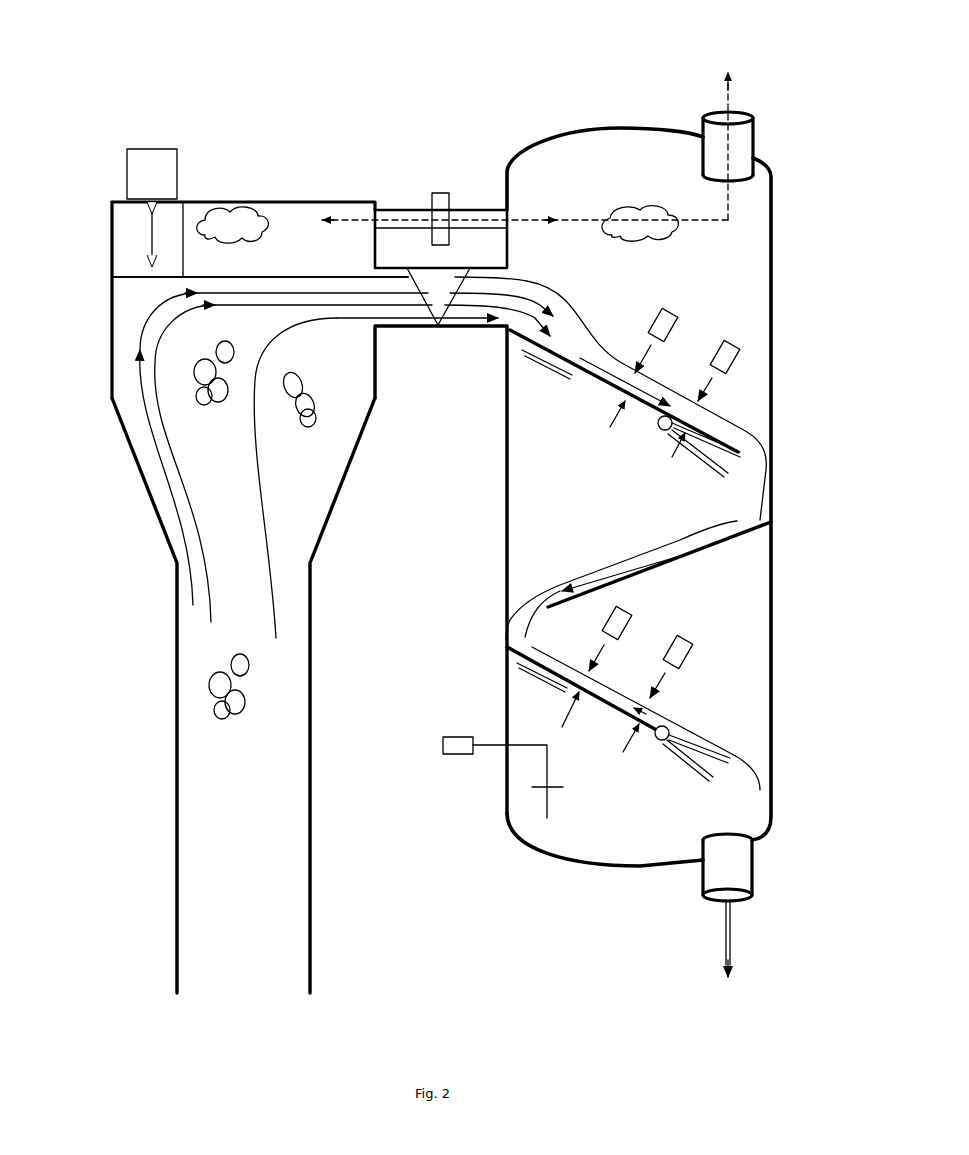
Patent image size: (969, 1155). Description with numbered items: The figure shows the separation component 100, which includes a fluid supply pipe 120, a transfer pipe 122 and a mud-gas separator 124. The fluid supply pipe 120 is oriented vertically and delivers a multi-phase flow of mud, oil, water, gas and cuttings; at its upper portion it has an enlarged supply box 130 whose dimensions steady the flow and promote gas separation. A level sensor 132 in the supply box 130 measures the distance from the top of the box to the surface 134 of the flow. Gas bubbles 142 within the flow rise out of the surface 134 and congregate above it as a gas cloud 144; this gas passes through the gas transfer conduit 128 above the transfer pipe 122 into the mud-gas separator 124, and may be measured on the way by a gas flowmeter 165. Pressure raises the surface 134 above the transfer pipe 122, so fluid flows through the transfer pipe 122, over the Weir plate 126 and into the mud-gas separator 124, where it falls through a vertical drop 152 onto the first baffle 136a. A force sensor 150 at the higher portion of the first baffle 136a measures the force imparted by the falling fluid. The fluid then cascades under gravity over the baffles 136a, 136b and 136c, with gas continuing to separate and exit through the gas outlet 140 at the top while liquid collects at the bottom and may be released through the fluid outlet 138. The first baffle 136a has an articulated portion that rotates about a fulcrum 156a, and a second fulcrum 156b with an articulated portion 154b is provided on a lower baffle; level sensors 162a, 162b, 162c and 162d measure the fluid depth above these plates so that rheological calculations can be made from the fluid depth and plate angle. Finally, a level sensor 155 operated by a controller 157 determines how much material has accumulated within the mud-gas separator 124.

The separation component 100 is at (490, 63).
The fluid supply pipe 120 is at (177, 771).
The transfer pipe 122 is at (462, 335).
The mud-gas separator 124 is at (771, 258).
The Weir plate 126 is at (434, 326).
The gas transfer conduit 128 is at (405, 210).
The supply box 130 is at (92, 203).
The level sensor 132 is at (160, 148).
The surface 134 is at (183, 202).
The first baffle 136a is at (602, 383).
The second baffle 136b is at (714, 545).
The third baffle 136c is at (622, 712).
The fluid outlet 138 is at (752, 868).
The gas outlet 140 is at (753, 150).
The gas bubbles 142 is at (312, 422).
The gas cloud 144 is at (240, 212).
The force sensor 150 is at (565, 380).
The vertical drop 152 is at (488, 335).
The articulated portion 154b is at (704, 470).
The level sensor 155 is at (547, 803).
The fulcrum 156a is at (665, 431).
The second fulcrum 156b is at (655, 748).
The controller 157 is at (458, 736).
The level sensor 162a is at (666, 311).
The level sensor 162b is at (724, 343).
The level sensor 162c is at (620, 609).
The sensor 162d is at (686, 638).
The gas flowmeter 165 is at (440, 193).